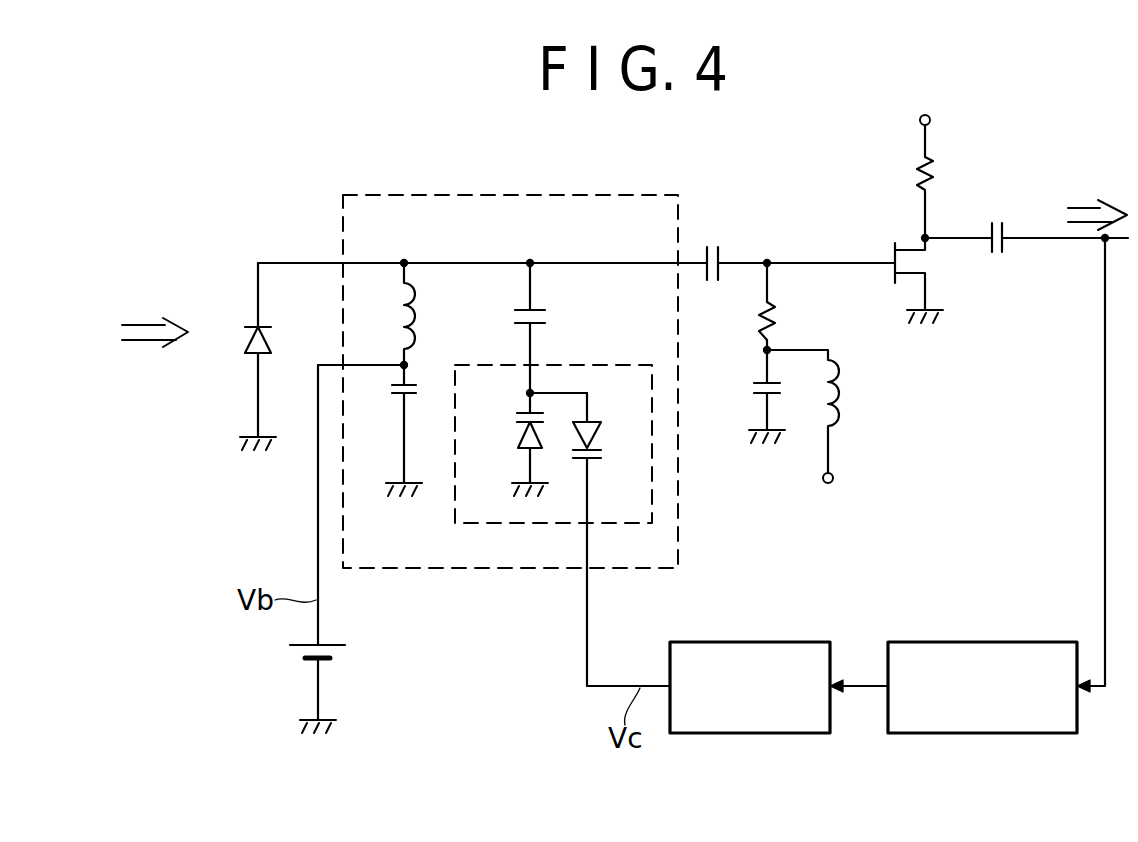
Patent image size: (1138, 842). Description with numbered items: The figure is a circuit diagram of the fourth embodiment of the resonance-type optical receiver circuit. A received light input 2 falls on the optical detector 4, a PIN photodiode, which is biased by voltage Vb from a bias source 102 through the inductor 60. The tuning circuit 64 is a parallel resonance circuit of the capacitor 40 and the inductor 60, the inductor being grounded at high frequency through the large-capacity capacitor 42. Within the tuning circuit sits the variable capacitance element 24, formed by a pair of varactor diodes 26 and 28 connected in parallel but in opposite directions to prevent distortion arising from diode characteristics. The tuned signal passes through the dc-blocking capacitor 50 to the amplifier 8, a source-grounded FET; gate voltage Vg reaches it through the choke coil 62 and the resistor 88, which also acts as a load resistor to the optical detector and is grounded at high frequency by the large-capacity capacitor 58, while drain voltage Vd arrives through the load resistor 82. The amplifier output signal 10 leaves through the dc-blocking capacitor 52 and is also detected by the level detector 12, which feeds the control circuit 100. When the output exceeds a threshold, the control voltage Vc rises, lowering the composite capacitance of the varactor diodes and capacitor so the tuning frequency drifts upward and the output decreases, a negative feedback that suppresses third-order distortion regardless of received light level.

The input signal 2 is at (145, 325).
The optical detector 4 is at (250, 352).
The amplifier 8 is at (905, 268).
The amplifier output signal 10 is at (1085, 208).
The level detector 12 is at (1022, 642).
The variable capacitance element 24 is at (588, 365).
The varactor diode 26 is at (520, 436).
The varactor diode 28 is at (598, 433).
The capacitor 40 is at (548, 318).
The capacitor 42 is at (396, 392).
The capacitor 50 is at (712, 247).
The capacitor 52 is at (997, 223).
The capacitor 58 is at (748, 388).
The inductor 60 is at (414, 292).
The choke coil 62 is at (840, 393).
The tuning circuit 64 is at (375, 195).
The load resistor 82 is at (912, 175).
The resistor 88 is at (775, 316).
The control circuit 100 is at (797, 642).
The bias voltage source 102 is at (347, 652).